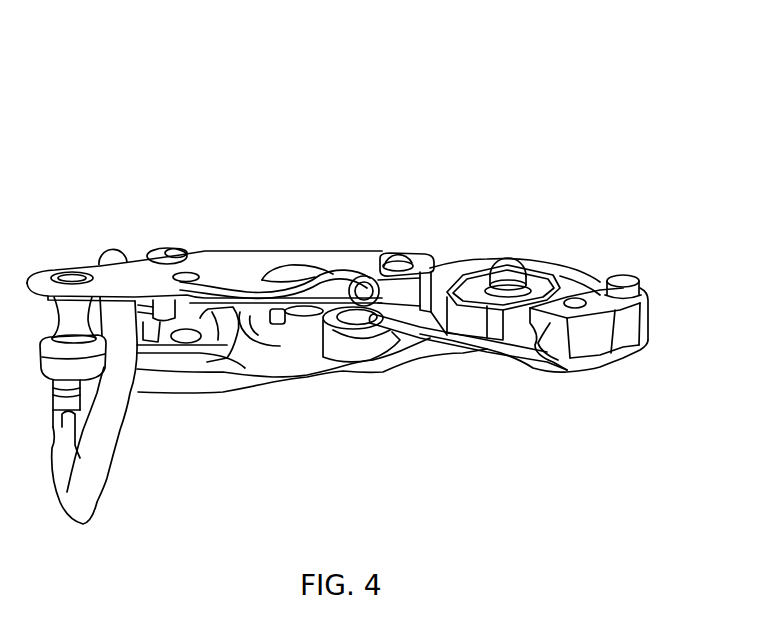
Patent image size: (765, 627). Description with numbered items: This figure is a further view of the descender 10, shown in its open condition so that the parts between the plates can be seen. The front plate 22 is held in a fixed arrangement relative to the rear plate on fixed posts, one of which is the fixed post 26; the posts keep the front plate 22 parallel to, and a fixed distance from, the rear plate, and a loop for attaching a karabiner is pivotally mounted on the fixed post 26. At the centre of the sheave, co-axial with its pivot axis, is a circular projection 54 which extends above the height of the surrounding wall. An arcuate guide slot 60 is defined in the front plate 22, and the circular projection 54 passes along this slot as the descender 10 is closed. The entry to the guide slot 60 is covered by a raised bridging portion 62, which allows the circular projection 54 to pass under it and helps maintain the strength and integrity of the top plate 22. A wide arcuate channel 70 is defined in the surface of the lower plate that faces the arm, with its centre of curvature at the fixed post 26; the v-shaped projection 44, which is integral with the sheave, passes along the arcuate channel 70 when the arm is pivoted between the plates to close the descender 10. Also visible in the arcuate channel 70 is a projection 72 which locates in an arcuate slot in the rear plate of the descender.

The fastening device 10 is at (103, 176).
The front plate 22 is at (231, 268).
The fixed post 26 is at (408, 260).
The v-shaped projection 44 is at (450, 352).
The circular projection 54 is at (511, 270).
The arcuate guide slot 60 is at (281, 268).
The raised bridging portion 62 is at (351, 276).
The arcuate channel 70 is at (357, 353).
The projection 72 is at (284, 327).